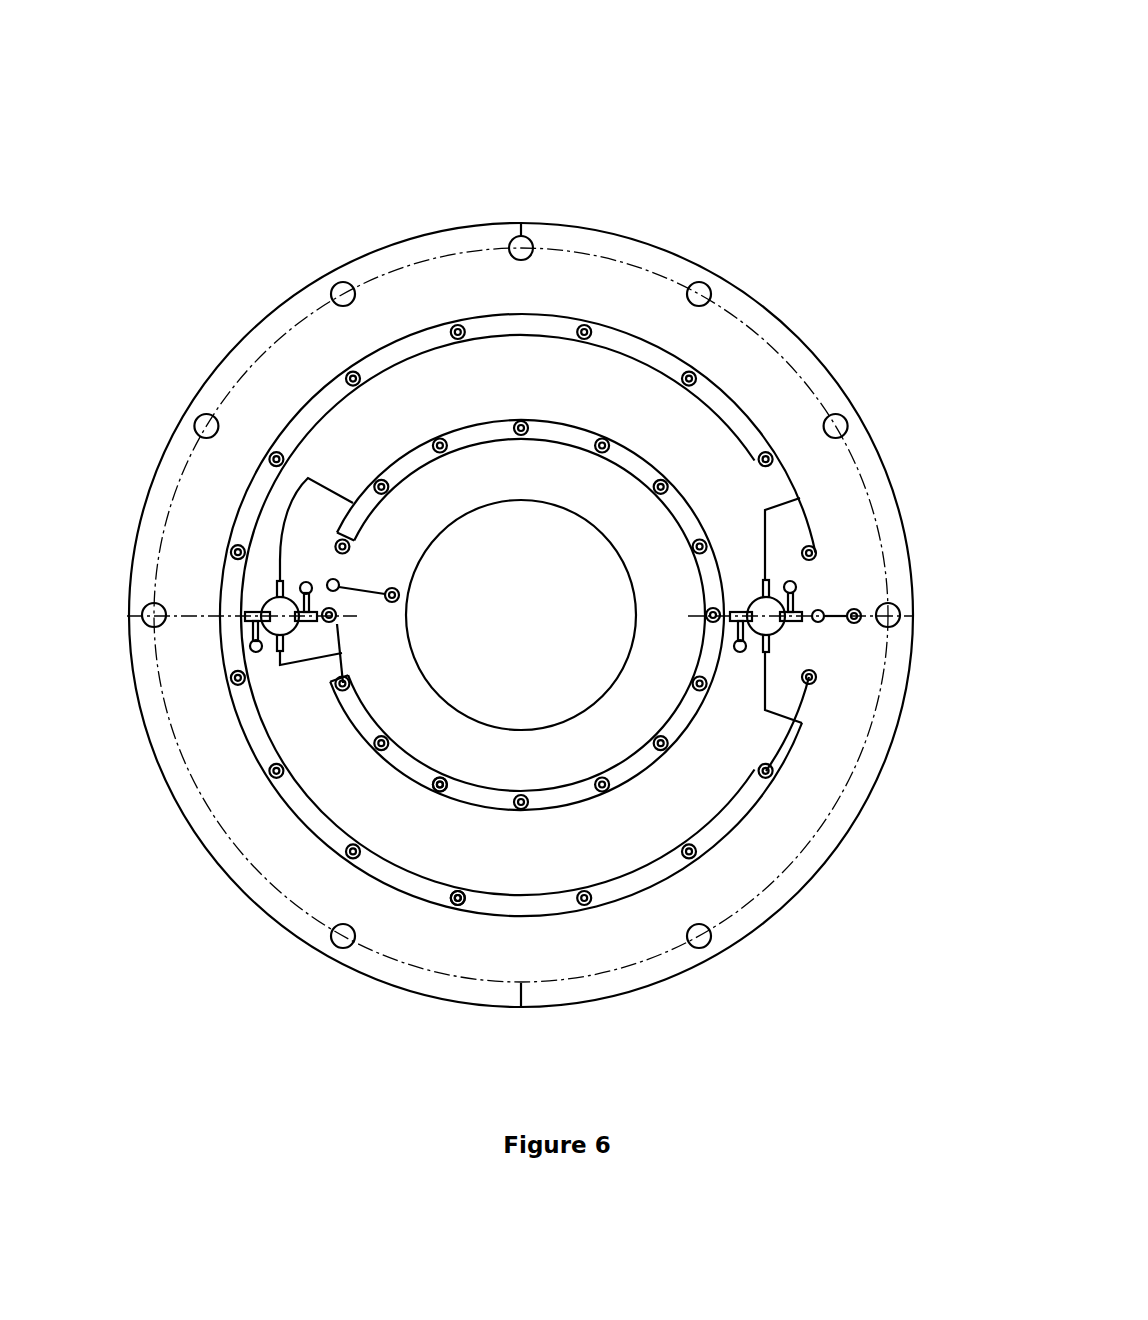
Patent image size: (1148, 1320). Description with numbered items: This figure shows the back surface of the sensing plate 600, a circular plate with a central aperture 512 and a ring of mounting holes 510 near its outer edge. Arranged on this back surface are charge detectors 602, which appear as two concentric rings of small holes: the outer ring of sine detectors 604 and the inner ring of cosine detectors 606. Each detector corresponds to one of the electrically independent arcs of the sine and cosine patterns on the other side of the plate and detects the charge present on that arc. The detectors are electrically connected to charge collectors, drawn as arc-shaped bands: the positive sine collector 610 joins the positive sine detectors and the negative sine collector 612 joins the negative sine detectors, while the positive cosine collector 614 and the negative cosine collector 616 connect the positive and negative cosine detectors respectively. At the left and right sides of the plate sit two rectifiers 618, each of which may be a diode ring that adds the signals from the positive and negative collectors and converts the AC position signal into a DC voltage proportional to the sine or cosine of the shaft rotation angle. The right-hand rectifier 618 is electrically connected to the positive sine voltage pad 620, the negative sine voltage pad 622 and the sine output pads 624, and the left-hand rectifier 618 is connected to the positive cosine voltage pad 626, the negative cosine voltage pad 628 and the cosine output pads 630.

The sensing plate 600 is at (806, 39).
The mounting holes 510 is at (704, 284).
The central aperture 512 is at (563, 628).
The charge detectors 602 is at (434, 788).
The sine detectors 604 is at (532, 612).
The cosine detectors 606 is at (538, 708).
The positive sine collector 610 is at (712, 846).
The negative sine collector 612 is at (667, 858).
The positive cosine collector 614 is at (592, 800).
The negative cosine collector 616 is at (552, 792).
The rectifier 618 is at (292, 631).
The positive sine voltage pad 620 is at (824, 617).
The negative sine voltage pad 622 is at (771, 640).
The sine output pads 624 is at (795, 583).
The positive cosine voltage pad 626 is at (239, 624).
The negative cosine voltage pad 628 is at (281, 651).
The cosine output pads 630 is at (306, 582).